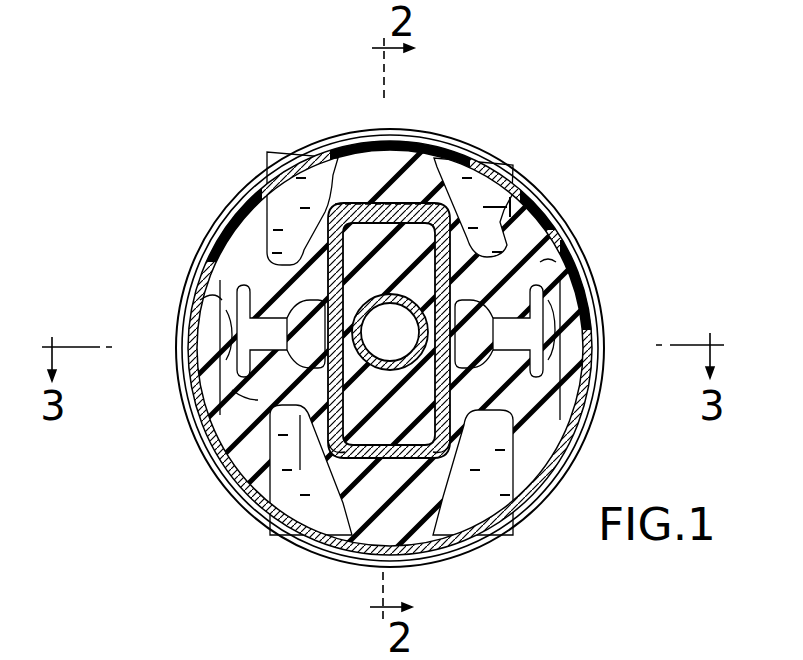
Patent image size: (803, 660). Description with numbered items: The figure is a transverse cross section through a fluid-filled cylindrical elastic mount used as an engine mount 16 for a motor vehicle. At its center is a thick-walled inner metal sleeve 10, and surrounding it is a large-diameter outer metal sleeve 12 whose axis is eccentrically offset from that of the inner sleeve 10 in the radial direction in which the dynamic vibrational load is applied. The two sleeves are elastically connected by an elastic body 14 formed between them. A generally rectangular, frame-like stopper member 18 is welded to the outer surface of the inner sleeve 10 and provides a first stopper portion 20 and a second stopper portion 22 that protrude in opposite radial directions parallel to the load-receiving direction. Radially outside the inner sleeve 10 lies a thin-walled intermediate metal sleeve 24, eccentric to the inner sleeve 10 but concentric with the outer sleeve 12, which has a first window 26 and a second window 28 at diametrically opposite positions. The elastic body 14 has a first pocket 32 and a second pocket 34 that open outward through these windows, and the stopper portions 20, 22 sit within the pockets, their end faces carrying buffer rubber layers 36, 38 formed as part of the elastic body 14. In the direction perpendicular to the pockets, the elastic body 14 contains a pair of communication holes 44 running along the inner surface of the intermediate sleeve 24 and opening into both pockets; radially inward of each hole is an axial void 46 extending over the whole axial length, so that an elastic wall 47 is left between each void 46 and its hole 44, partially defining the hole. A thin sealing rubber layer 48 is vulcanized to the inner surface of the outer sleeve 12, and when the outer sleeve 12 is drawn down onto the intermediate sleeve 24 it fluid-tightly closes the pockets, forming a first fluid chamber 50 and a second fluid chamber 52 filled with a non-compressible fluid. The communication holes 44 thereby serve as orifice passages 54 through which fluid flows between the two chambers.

The inner metal sleeve 10 is at (358, 338).
The outer metal sleeve 12 is at (498, 170).
The elastic body 14 is at (291, 432).
The engine mount 16 is at (240, 95).
The stopper member 18 is at (303, 282).
The first stopper portion 20 is at (353, 207).
The second stopper portion 22 is at (433, 447).
The intermediate metal sleeve 24 is at (200, 332).
The first window 26 is at (215, 270).
The second window 28 is at (540, 475).
The first pocket 32 is at (513, 210).
The second pocket 34 is at (490, 462).
The buffer rubber layer 36 is at (420, 173).
The buffer rubber layer 38 is at (356, 538).
The communication hole 44 is at (236, 326).
The axial void 46 is at (257, 407).
The elastic wall 47 is at (232, 373).
The sealing rubber layer 48 is at (570, 283).
The first fluid chamber 50 is at (468, 173).
The second fluid chamber 52 is at (333, 533).
The orifice passage 54 is at (235, 395).